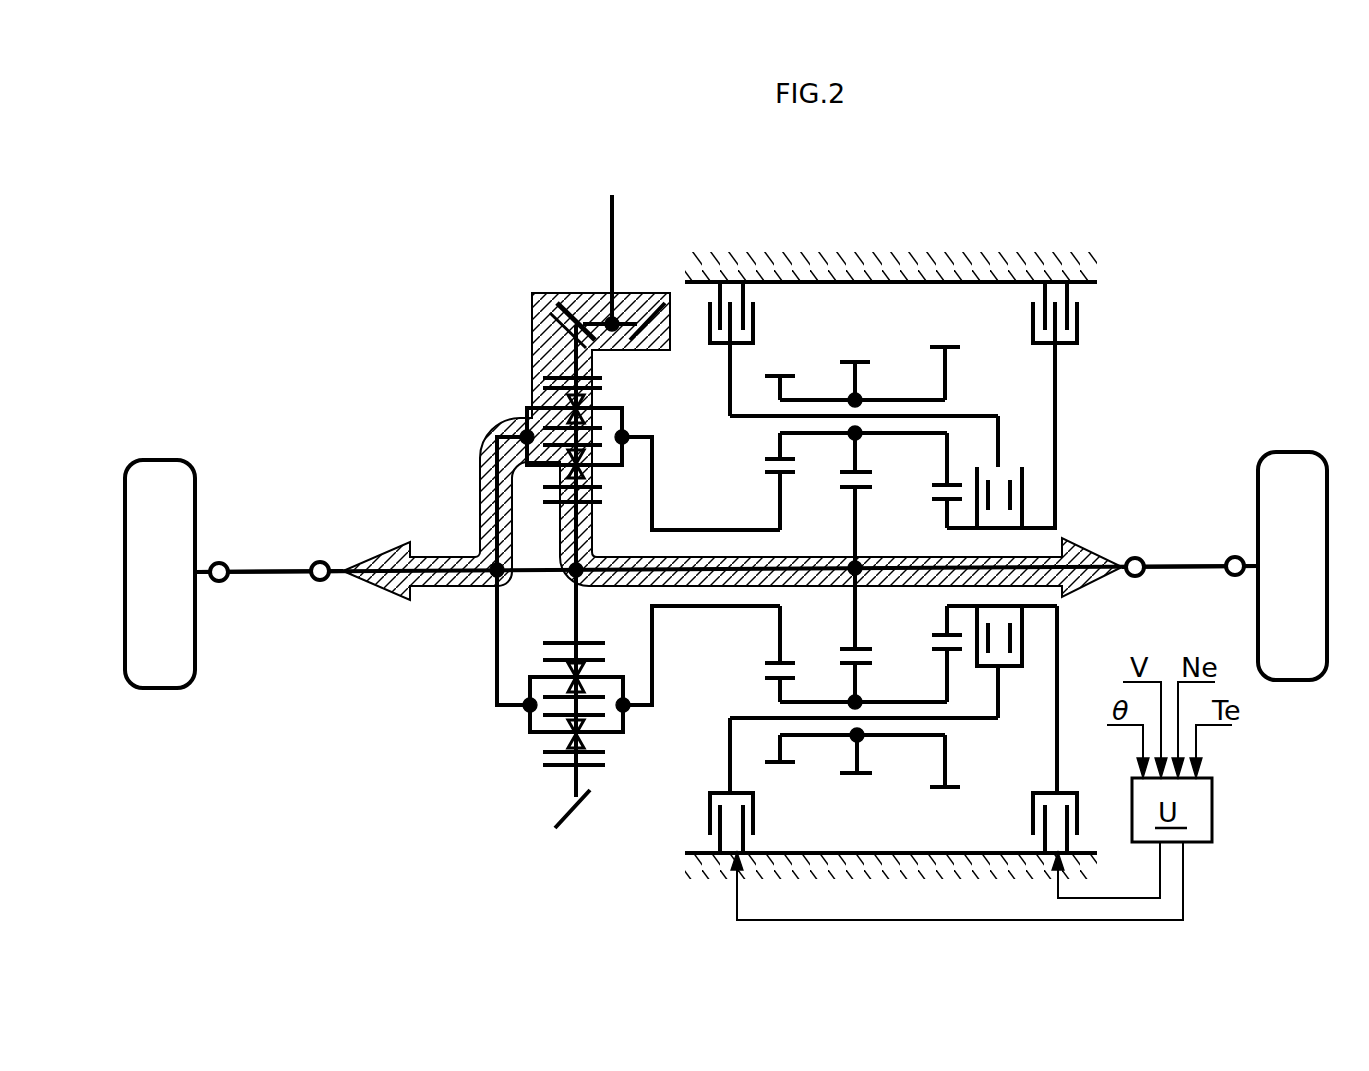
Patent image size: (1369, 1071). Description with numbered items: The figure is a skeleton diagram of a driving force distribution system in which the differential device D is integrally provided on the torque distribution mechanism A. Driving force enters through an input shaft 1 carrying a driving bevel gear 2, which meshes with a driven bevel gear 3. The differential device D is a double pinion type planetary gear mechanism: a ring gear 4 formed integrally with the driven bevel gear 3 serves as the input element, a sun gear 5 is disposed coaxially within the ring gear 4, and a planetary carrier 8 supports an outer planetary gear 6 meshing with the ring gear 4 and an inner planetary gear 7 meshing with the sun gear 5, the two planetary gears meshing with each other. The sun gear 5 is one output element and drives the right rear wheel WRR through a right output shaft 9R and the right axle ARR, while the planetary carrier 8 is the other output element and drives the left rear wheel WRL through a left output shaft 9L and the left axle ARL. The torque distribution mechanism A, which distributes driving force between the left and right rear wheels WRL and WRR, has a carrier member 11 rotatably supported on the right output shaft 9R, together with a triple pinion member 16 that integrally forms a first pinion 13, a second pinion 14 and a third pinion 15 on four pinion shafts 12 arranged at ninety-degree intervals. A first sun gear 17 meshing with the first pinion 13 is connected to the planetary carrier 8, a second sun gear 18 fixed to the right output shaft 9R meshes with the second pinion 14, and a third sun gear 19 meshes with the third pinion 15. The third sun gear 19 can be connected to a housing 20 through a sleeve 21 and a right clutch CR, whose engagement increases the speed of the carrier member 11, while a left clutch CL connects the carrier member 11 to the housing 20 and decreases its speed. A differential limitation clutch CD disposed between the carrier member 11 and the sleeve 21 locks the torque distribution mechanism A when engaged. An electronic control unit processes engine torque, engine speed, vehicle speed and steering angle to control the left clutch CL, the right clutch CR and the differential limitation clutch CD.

The input shaft 1 is at (614, 268).
The driving bevel gear 2 is at (578, 302).
The driven bevel gear 3 is at (553, 333).
The ring gear 4 is at (600, 383).
The sun gear 5 is at (558, 505).
The outer planetary gear 6 is at (602, 393).
The inner planetary gear 7 is at (603, 490).
The planetary carrier 8 is at (490, 464).
The left output shaft 9L is at (412, 546).
The right output shaft 9R is at (1070, 554).
The carrier member 11 is at (727, 398).
The pinion shaft 12 is at (945, 416).
The first pinion 13 is at (790, 375).
The second pinion 14 is at (858, 362).
The third pinion 15 is at (935, 347).
The triple pinion member 16 is at (900, 394).
The first sun gear 17 is at (765, 470).
The second sun gear 18 is at (850, 487).
The third sun gear 19 is at (937, 500).
The housing 20 is at (873, 268).
The sleeve 21 is at (1040, 522).
The torque distribution mechanism A is at (921, 228).
The differential device D is at (503, 410).
The left clutch CL is at (760, 298).
The right clutch CR is at (1084, 322).
The differential limitation clutch CD is at (1026, 474).
The left rear wheel WRL is at (160, 460).
The right rear wheel WRR is at (1290, 452).
The left axle ARL is at (278, 571).
The right axle ARR is at (1190, 566).